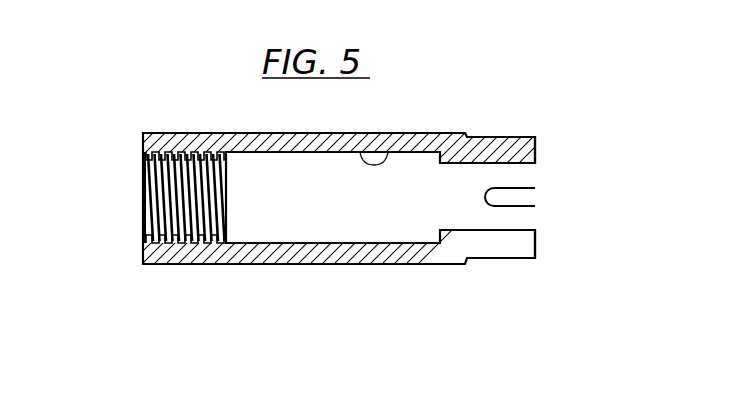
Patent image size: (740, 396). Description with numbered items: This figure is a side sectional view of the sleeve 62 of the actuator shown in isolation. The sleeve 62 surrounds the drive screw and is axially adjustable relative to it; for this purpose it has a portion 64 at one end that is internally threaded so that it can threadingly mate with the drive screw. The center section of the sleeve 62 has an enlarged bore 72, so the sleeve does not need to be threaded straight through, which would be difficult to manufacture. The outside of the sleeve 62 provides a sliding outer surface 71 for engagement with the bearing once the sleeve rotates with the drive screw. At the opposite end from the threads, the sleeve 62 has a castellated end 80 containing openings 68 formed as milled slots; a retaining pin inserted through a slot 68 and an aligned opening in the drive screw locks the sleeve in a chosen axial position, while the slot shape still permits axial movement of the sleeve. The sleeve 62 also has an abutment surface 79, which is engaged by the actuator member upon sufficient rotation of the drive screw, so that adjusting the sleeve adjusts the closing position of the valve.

The sleeve 62 is at (463, 133).
The internally threaded portion 64 is at (142, 186).
The opening 68 is at (531, 205).
The sliding outer surface 71 is at (212, 133).
The enlarged bore 72 is at (389, 152).
The abutment surface 79 is at (142, 253).
The castellated end 80 is at (522, 137).